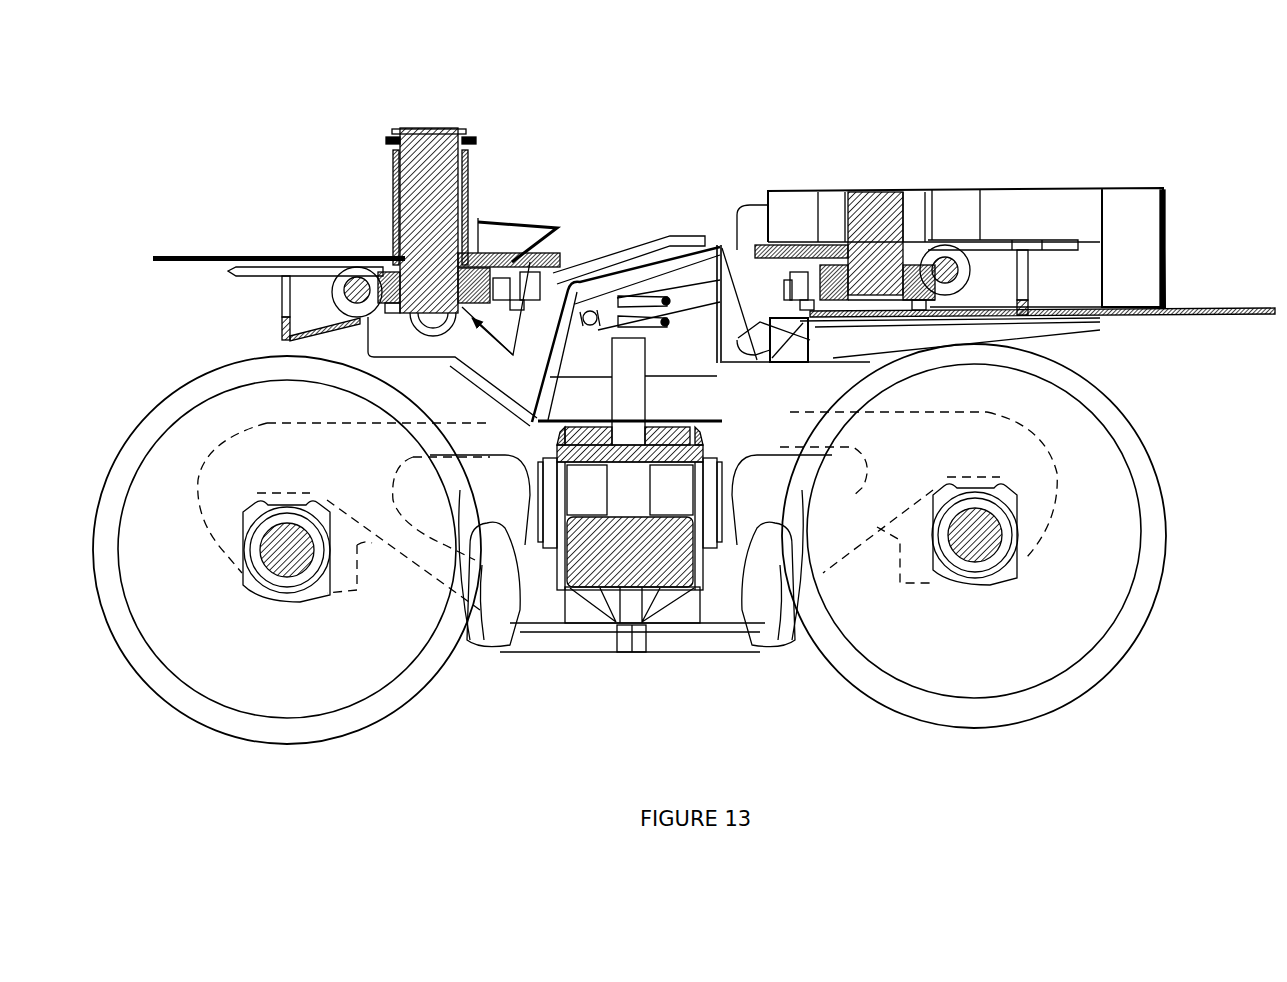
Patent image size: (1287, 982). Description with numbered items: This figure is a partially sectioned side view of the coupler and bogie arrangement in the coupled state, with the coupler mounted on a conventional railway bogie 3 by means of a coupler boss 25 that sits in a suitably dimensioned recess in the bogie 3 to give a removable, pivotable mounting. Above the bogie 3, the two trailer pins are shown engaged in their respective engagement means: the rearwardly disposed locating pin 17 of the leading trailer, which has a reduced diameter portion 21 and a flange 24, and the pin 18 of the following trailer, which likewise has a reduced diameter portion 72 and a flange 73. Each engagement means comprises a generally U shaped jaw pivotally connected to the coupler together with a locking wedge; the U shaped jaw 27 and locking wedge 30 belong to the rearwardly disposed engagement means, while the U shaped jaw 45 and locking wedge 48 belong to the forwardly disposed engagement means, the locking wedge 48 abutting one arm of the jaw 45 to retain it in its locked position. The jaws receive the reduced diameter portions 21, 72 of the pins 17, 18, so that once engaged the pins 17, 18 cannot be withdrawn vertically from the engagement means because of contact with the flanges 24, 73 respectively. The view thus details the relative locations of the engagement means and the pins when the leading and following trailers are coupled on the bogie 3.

The railway bogie 3 is at (1087, 728).
The locating pin 17 is at (878, 195).
The pin 18 is at (438, 173).
The reduced diameter portion 21 is at (820, 237).
The flange 24 is at (765, 330).
The coupler boss 25 is at (603, 440).
The U shaped jaw 27 is at (770, 225).
The locking wedge 30 is at (833, 312).
The U shaped jaw 45 is at (475, 257).
The locking wedge 48 is at (340, 257).
The reduced diameter portion 72 is at (380, 247).
The flange 73 is at (557, 228).